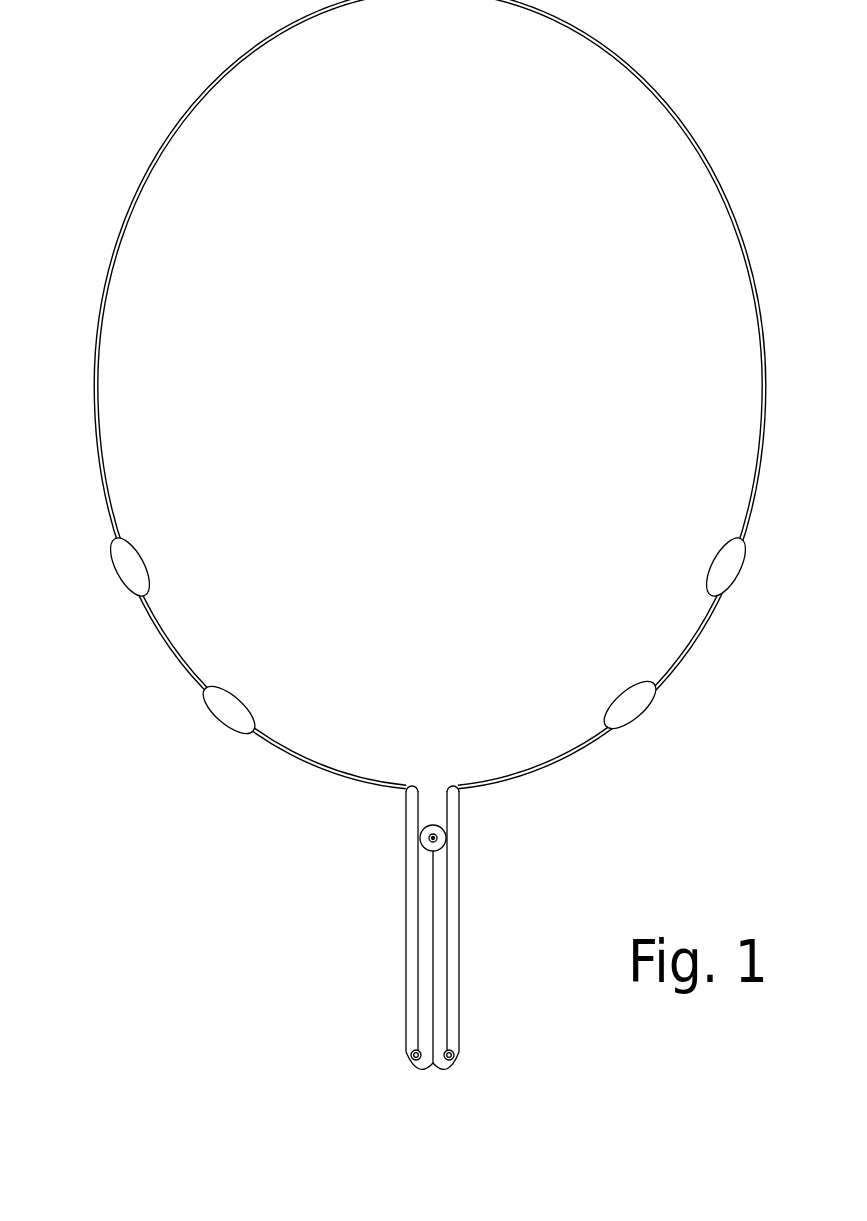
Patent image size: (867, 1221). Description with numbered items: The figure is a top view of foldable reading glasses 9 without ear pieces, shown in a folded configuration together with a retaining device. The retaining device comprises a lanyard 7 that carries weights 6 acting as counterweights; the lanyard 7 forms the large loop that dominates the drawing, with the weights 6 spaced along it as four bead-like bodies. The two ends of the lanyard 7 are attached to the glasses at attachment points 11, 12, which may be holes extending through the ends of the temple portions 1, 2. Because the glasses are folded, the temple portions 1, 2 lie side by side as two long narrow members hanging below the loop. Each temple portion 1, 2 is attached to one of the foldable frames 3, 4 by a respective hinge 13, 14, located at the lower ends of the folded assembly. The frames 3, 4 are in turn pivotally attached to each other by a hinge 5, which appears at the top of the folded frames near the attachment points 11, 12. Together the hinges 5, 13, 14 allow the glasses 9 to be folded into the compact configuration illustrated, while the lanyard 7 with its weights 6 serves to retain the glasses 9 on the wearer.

The temple portion 1 is at (453, 884).
The temple portion 2 is at (407, 906).
The foldable frame 3 is at (437, 978).
The foldable frame 4 is at (425, 957).
The hinge 5 is at (433, 825).
The weights 6 is at (132, 566).
The lanyard 7 is at (720, 197).
The foldable reading glasses 9 is at (503, 925).
The attachment point 11 is at (460, 808).
The attachment point 12 is at (405, 803).
The hinge 13 is at (453, 1060).
The hinge 14 is at (412, 1060).